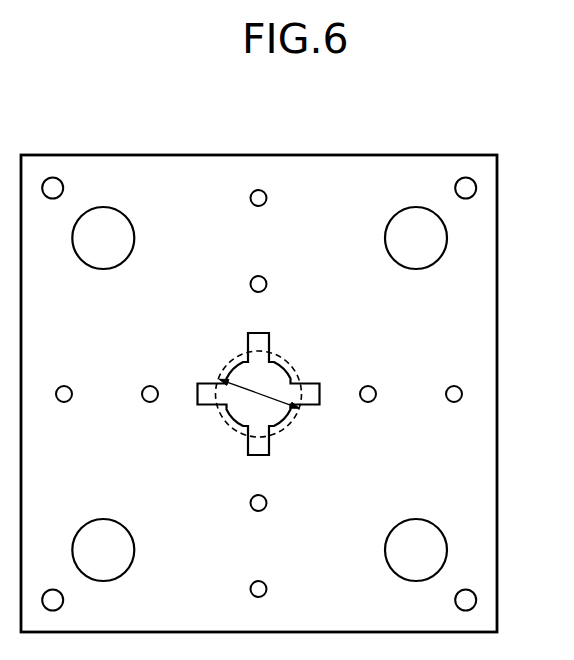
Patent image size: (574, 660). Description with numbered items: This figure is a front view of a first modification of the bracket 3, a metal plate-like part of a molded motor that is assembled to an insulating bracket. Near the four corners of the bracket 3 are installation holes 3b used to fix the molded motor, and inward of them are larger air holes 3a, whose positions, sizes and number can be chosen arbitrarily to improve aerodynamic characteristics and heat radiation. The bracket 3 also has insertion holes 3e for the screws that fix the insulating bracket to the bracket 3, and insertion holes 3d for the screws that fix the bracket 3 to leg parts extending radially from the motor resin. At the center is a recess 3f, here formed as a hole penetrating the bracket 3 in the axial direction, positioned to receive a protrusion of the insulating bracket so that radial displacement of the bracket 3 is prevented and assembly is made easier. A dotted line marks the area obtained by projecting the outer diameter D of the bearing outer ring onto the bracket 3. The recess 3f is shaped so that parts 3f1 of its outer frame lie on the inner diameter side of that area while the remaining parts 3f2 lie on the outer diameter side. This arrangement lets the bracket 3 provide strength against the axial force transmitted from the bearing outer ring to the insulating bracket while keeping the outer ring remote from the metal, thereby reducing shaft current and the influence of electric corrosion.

The bracket 3 is at (497, 268).
The air holes 3a is at (447, 543).
The installation holes 3b is at (476, 600).
The insertion holes 3d is at (462, 394).
The insertion holes 3e is at (368, 386).
The recess 3f is at (264, 333).
The parts of the outer frame of the recess 3f1 is at (281, 362).
The remaining parts of the outer frame of the recess 3f2 is at (320, 398).
The outer diameter of the outer ring of the bearing D is at (241, 381).